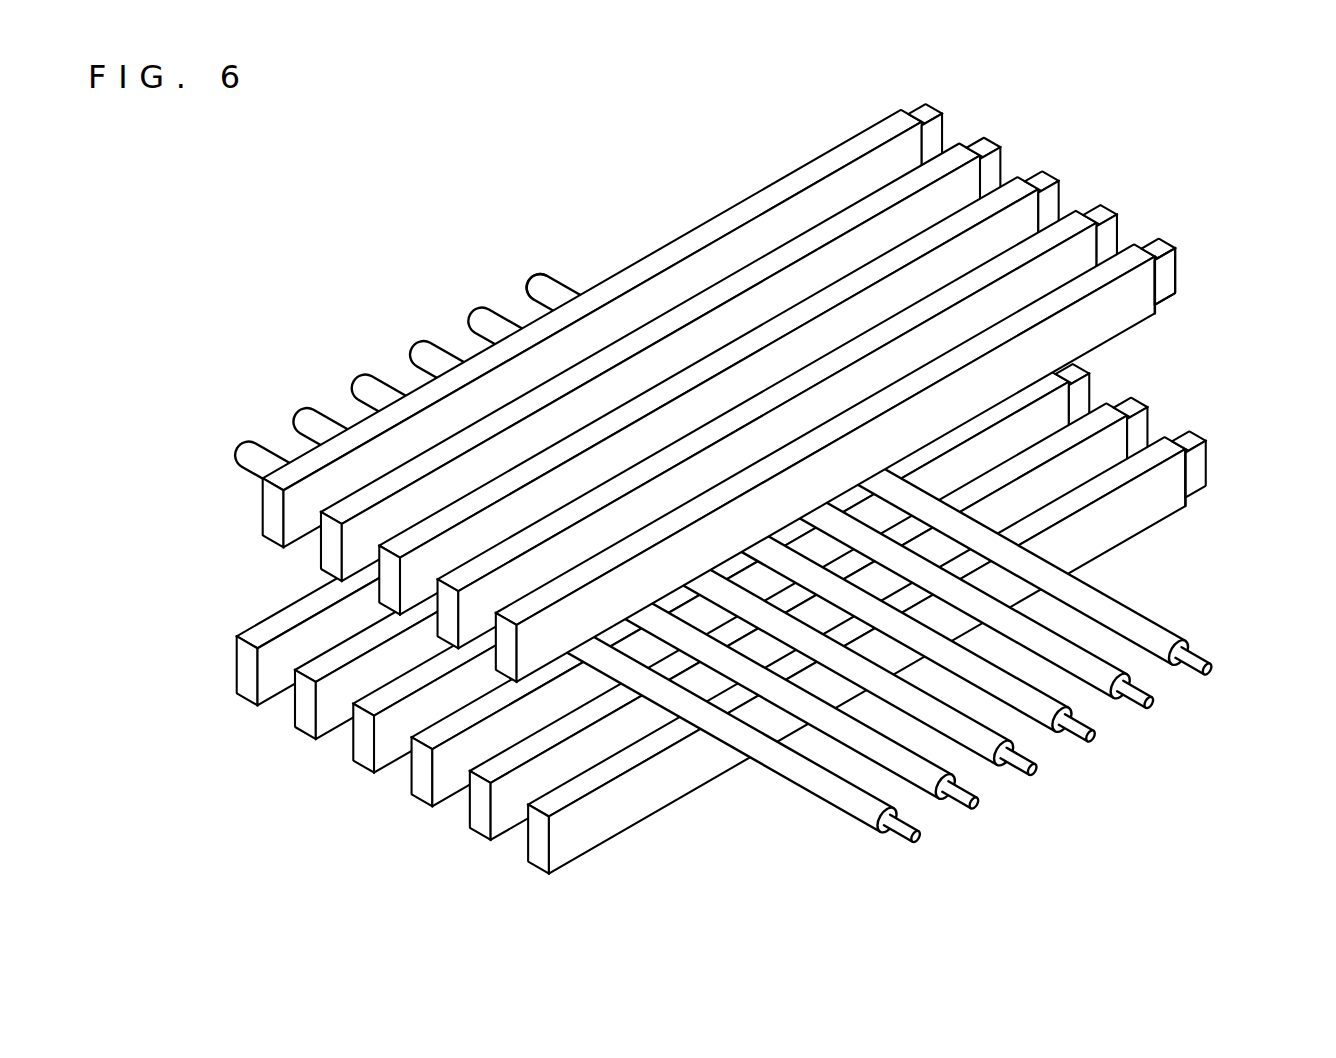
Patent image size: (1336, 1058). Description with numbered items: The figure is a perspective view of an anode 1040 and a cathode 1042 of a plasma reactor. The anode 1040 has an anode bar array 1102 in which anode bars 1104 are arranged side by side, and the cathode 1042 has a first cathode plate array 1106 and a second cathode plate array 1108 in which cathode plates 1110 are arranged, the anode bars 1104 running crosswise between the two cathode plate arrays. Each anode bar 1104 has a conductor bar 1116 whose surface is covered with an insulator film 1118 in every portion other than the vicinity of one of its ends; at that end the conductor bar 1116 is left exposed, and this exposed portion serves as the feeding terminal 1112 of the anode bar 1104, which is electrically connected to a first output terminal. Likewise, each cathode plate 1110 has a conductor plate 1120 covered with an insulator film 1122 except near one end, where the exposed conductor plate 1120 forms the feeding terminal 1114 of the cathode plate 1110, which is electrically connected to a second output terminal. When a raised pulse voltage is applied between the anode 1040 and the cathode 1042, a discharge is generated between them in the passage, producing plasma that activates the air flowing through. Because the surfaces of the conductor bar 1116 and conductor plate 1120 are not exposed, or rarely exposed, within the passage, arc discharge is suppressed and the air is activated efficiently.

The anode 1040 is at (888, 505).
The cathode 1042 is at (1232, 381).
The anode bar array 1102 is at (642, 520).
The anode bar 1104 is at (585, 257).
The first cathode plate array 1106 is at (668, 395).
The second cathode plate array 1108 is at (690, 579).
The cathode plate 1110 is at (567, 674).
The feeding terminal of the anode bar 1112 is at (1092, 741).
The feeding terminal of the cathode plate 1114 is at (1208, 366).
The conductor bar 1116 is at (1080, 753).
The insulator film 1118 is at (868, 471).
The conductor plate 1120 is at (1214, 275).
The insulator film 1122 is at (841, 463).